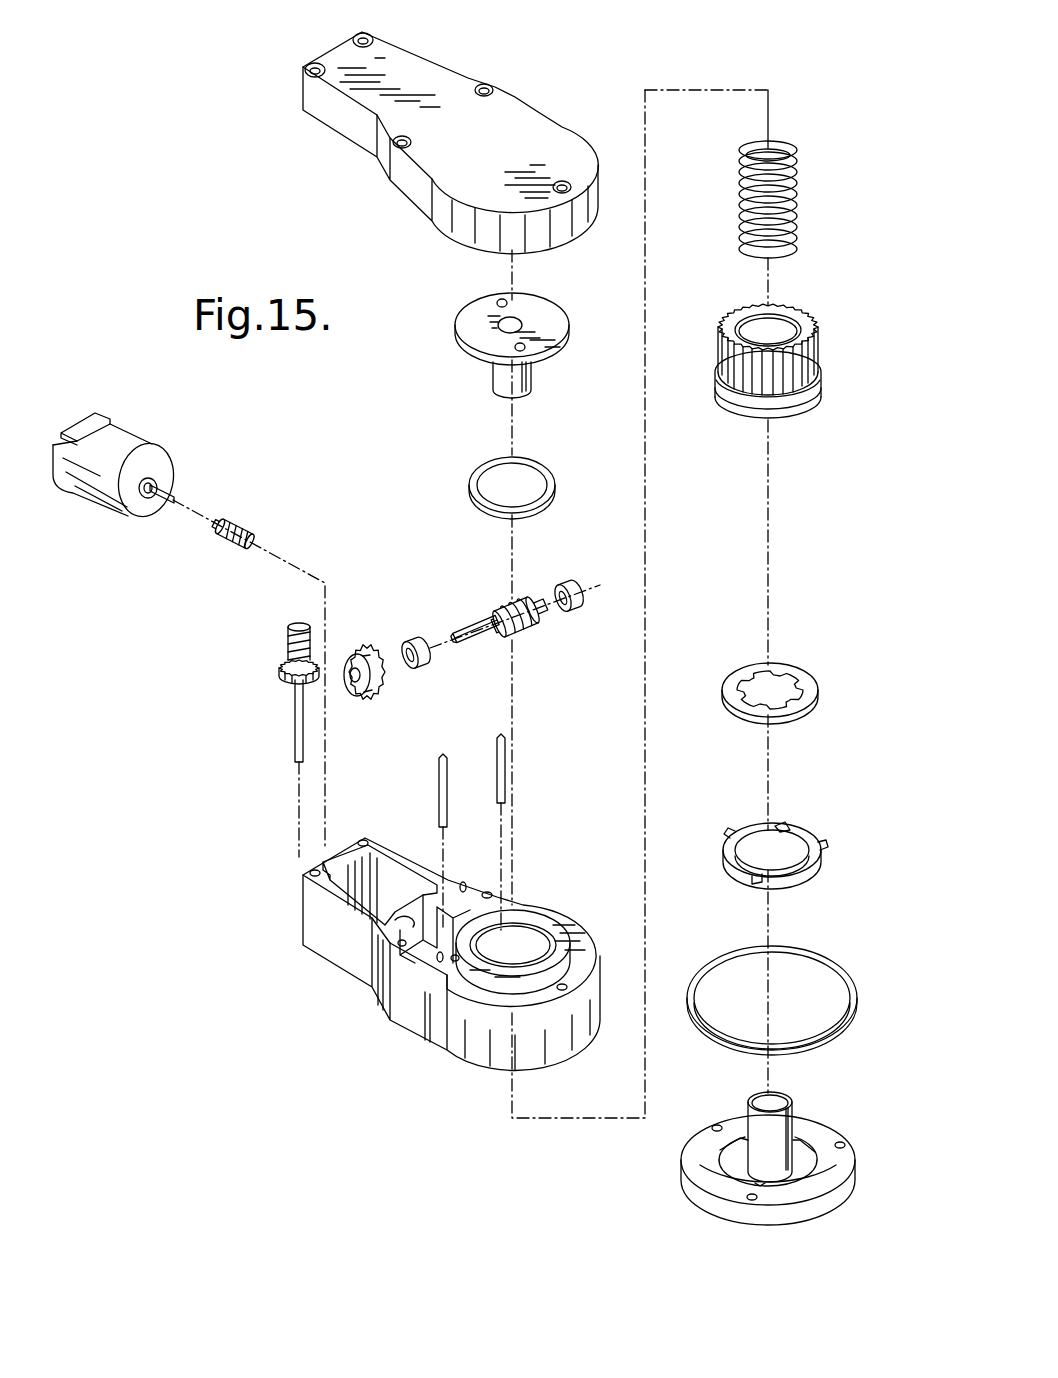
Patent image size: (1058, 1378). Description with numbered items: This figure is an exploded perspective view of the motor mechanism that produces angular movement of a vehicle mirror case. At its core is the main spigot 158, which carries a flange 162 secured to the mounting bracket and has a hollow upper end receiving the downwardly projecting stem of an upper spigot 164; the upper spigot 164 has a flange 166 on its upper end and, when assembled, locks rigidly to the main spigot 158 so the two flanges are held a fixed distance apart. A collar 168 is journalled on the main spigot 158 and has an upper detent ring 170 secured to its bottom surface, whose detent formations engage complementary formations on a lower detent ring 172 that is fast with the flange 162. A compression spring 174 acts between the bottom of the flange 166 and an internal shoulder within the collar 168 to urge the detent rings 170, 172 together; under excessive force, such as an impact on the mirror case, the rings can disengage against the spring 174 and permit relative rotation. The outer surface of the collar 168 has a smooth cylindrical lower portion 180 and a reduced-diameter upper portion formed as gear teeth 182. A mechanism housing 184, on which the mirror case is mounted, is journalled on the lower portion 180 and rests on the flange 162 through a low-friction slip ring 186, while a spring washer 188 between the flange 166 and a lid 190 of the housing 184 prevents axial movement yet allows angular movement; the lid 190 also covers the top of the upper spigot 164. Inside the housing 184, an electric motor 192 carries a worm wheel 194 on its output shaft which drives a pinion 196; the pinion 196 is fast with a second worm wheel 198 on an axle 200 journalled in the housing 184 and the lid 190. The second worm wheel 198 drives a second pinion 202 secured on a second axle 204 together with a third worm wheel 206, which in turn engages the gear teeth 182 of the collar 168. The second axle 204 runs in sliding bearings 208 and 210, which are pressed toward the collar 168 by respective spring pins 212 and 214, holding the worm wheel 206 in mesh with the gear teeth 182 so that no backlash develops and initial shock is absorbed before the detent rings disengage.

The main spigot 158 is at (757, 1118).
The flange 162 is at (703, 1193).
The upper spigot 164 is at (532, 396).
The flange 166 is at (555, 308).
The collar 168 is at (787, 400).
The upper detent ring 170 is at (810, 678).
The lower detent ring 172 is at (800, 832).
The compression spring 174 is at (797, 233).
The lower portion 180 is at (805, 397).
The gear teeth 182 is at (818, 353).
The mechanism housing 184 is at (348, 958).
The low-friction slip ring 186 is at (830, 963).
The spring washer 188 is at (463, 477).
The lid 190 is at (542, 128).
The electric motor 192 is at (138, 453).
The worm wheel 194 is at (253, 527).
The pinion 196 is at (283, 682).
The second worm wheel 198 is at (288, 643).
The axle 200 is at (293, 735).
The second pinion 202 is at (370, 645).
The second axle 204 is at (465, 628).
The third worm wheel 206 is at (522, 623).
The sliding bearing 208 is at (412, 667).
The sliding bearing 210 is at (568, 582).
The spring pin 212 is at (438, 780).
The spring pin 214 is at (507, 773).